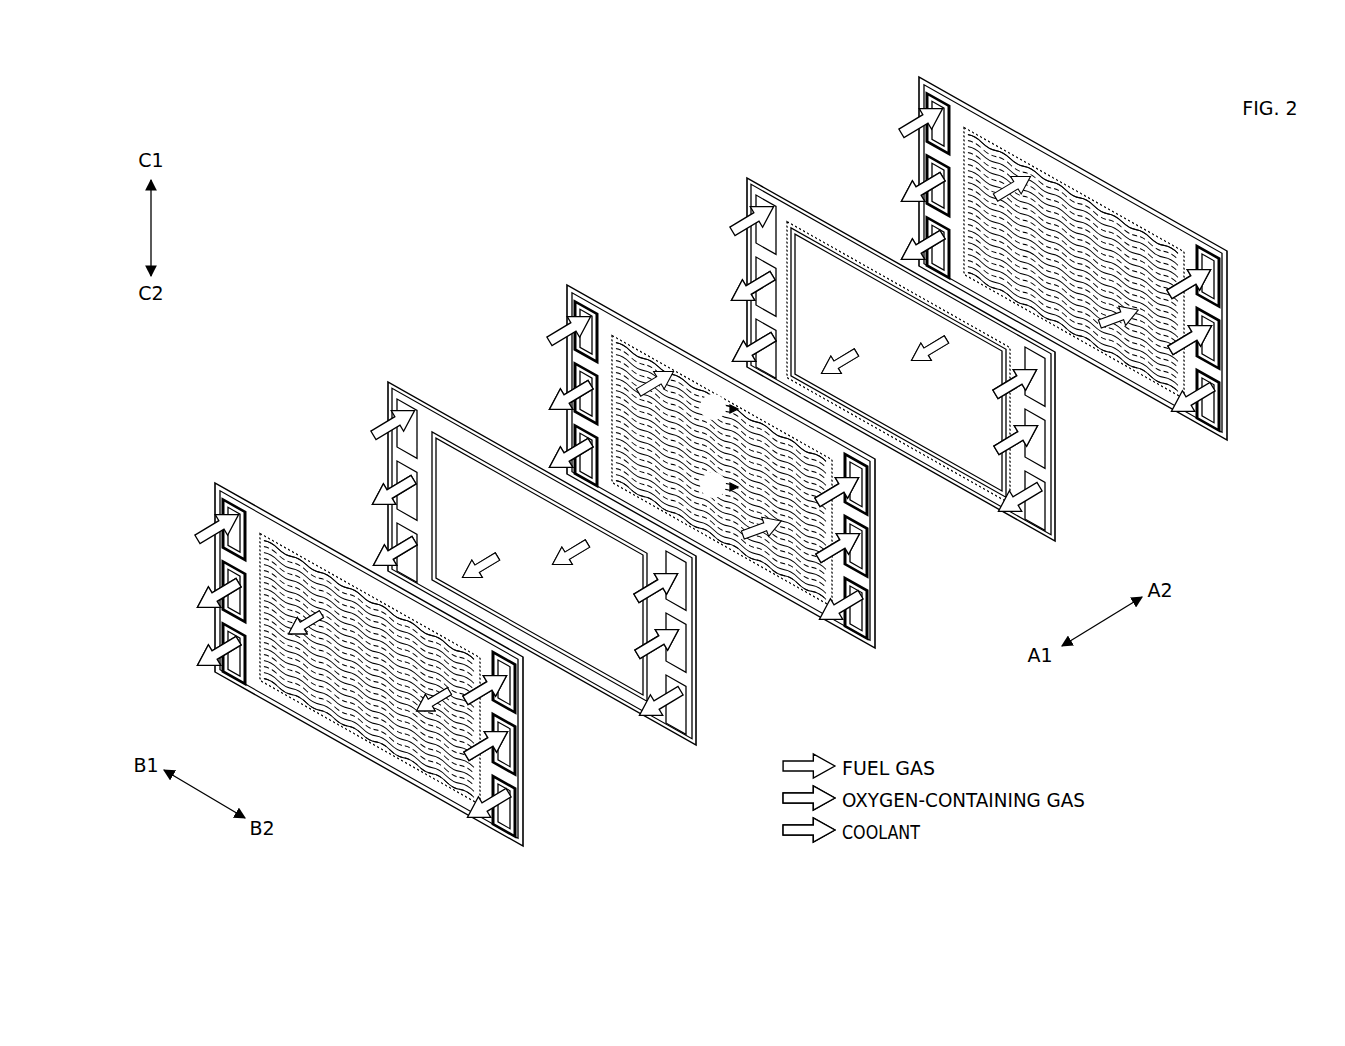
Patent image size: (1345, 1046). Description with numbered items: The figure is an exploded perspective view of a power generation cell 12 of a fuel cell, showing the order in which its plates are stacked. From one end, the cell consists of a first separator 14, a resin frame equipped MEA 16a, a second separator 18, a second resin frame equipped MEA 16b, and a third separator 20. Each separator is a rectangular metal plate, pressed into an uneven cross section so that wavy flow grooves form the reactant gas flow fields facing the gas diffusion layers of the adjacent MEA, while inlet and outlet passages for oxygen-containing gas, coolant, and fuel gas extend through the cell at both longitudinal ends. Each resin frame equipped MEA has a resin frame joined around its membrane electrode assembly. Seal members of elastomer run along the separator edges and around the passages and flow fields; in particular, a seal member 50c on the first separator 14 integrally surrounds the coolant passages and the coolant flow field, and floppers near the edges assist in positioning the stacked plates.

The power generation cell 12 is at (1309, 170).
The first separator 14 is at (361, 632).
The resin frame equipped MEA 16a is at (531, 532).
The resin frame equipped MEA 16b is at (890, 326).
The second separator 18 is at (711, 457).
The third separator 20 is at (1065, 285).
The seal member 50c is at (268, 688).